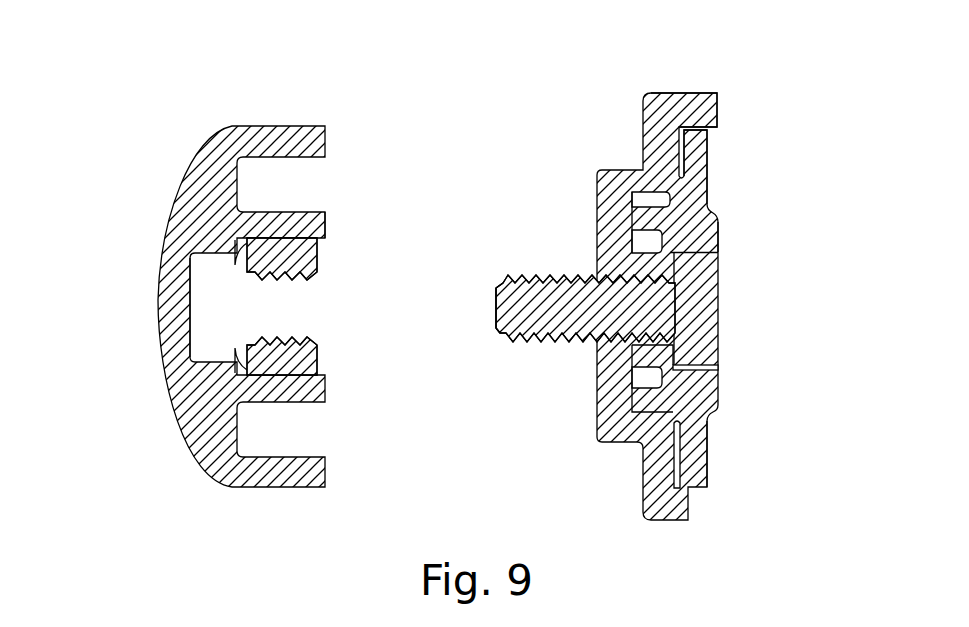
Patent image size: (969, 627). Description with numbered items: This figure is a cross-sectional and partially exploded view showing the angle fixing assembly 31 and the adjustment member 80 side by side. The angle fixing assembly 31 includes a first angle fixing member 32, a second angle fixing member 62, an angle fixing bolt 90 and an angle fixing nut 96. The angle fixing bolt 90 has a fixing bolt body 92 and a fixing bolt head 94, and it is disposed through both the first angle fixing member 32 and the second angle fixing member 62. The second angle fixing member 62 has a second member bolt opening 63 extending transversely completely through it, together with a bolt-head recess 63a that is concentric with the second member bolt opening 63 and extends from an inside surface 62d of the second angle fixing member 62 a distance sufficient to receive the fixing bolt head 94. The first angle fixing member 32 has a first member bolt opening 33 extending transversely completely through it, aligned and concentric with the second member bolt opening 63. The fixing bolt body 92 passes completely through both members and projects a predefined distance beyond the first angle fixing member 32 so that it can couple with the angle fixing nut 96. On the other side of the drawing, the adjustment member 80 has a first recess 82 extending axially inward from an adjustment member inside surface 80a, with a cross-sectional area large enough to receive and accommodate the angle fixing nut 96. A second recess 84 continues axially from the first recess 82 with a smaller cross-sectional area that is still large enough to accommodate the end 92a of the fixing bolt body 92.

The angle fixing assembly 31 is at (692, 274).
The first angle fixing member 32 is at (650, 93).
The first member bolt opening 33 is at (618, 270).
The second angle fixing member 62 is at (695, 187).
The inside surface 62d is at (719, 235).
The second member bolt opening 63 is at (647, 350).
The bolt-head recess 63a is at (712, 362).
The adjustment member 80 is at (173, 213).
The adjustment member inside surface 80a is at (325, 222).
The first recess 82 is at (323, 377).
The second recess 84 is at (213, 318).
The angle fixing bolt 90 is at (558, 329).
The fixing bolt body 92 is at (545, 272).
The end of fixing bolt body 92a is at (495, 310).
The fixing bolt head 94 is at (718, 300).
The angle fixing nut 96 is at (317, 262).